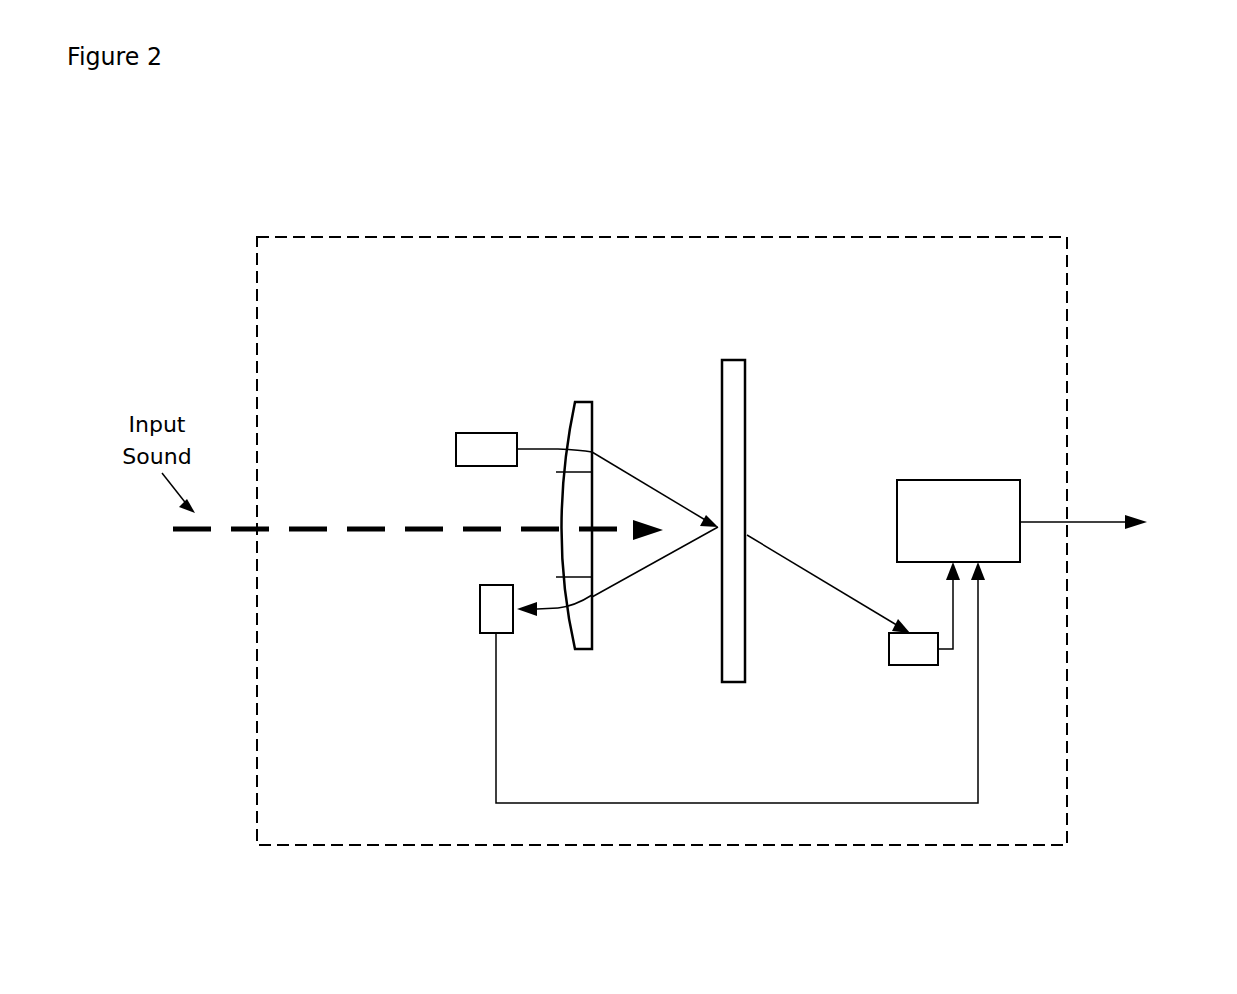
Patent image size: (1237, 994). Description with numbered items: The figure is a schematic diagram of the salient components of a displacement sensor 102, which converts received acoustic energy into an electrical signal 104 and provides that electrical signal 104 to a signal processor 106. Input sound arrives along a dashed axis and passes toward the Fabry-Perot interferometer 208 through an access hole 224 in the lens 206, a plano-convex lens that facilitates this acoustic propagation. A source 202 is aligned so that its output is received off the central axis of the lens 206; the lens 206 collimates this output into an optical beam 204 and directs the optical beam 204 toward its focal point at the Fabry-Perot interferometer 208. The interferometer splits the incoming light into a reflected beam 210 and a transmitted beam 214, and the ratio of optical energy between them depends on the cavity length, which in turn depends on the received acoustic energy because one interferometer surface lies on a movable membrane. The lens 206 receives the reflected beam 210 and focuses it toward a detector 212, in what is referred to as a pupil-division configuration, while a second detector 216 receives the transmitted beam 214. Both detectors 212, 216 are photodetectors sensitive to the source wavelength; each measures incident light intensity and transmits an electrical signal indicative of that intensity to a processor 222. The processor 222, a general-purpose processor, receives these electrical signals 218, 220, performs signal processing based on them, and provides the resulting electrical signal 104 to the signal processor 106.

The displacement sensor 102 is at (515, 272).
The electrical signal 104 is at (1126, 466).
The signal processor 106 is at (1152, 606).
The source 202 is at (457, 406).
The optical beam 204 is at (655, 469).
The lens 206 is at (534, 498).
The Fabry-Perot interferometer 208 is at (792, 514).
The reflected beam 210 is at (655, 586).
The detector 212 is at (457, 649).
The transmitted beam 214 is at (828, 590).
The detector 216 is at (879, 671).
The electrical signal 218 is at (775, 682).
The electrical signal 220 is at (996, 605).
The processor 222 is at (941, 487).
The access hole 224 is at (459, 579).